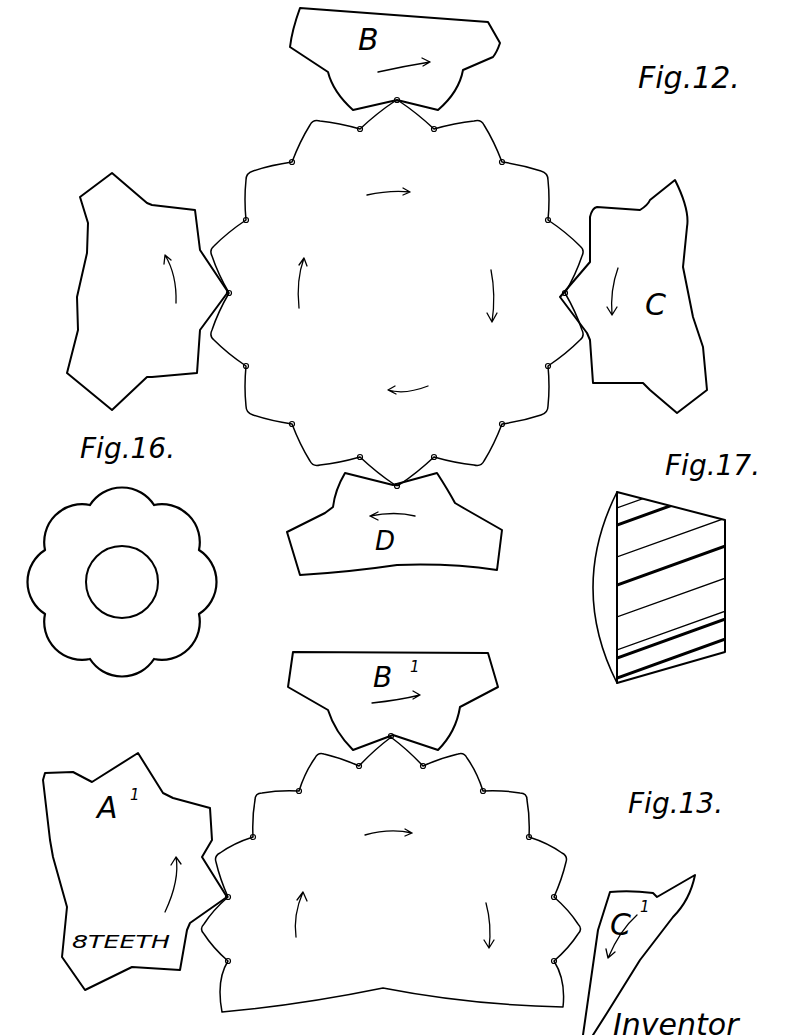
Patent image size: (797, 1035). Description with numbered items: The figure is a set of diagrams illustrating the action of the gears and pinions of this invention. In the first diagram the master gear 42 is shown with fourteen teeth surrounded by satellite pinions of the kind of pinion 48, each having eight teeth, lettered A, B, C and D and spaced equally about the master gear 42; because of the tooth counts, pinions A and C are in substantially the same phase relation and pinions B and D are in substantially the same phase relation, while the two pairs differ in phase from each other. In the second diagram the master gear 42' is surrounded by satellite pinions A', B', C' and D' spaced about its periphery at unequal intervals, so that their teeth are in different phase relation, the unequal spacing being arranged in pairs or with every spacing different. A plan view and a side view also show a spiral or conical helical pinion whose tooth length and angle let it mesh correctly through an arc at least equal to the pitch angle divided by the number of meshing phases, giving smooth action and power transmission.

In FIG. 12, the master gear 42 is at (397, 293).
In FIG. 12, the pinion 48 is at (120, 197).
In FIG. 13, the sixteen-tooth gear 42' is at (391, 873).